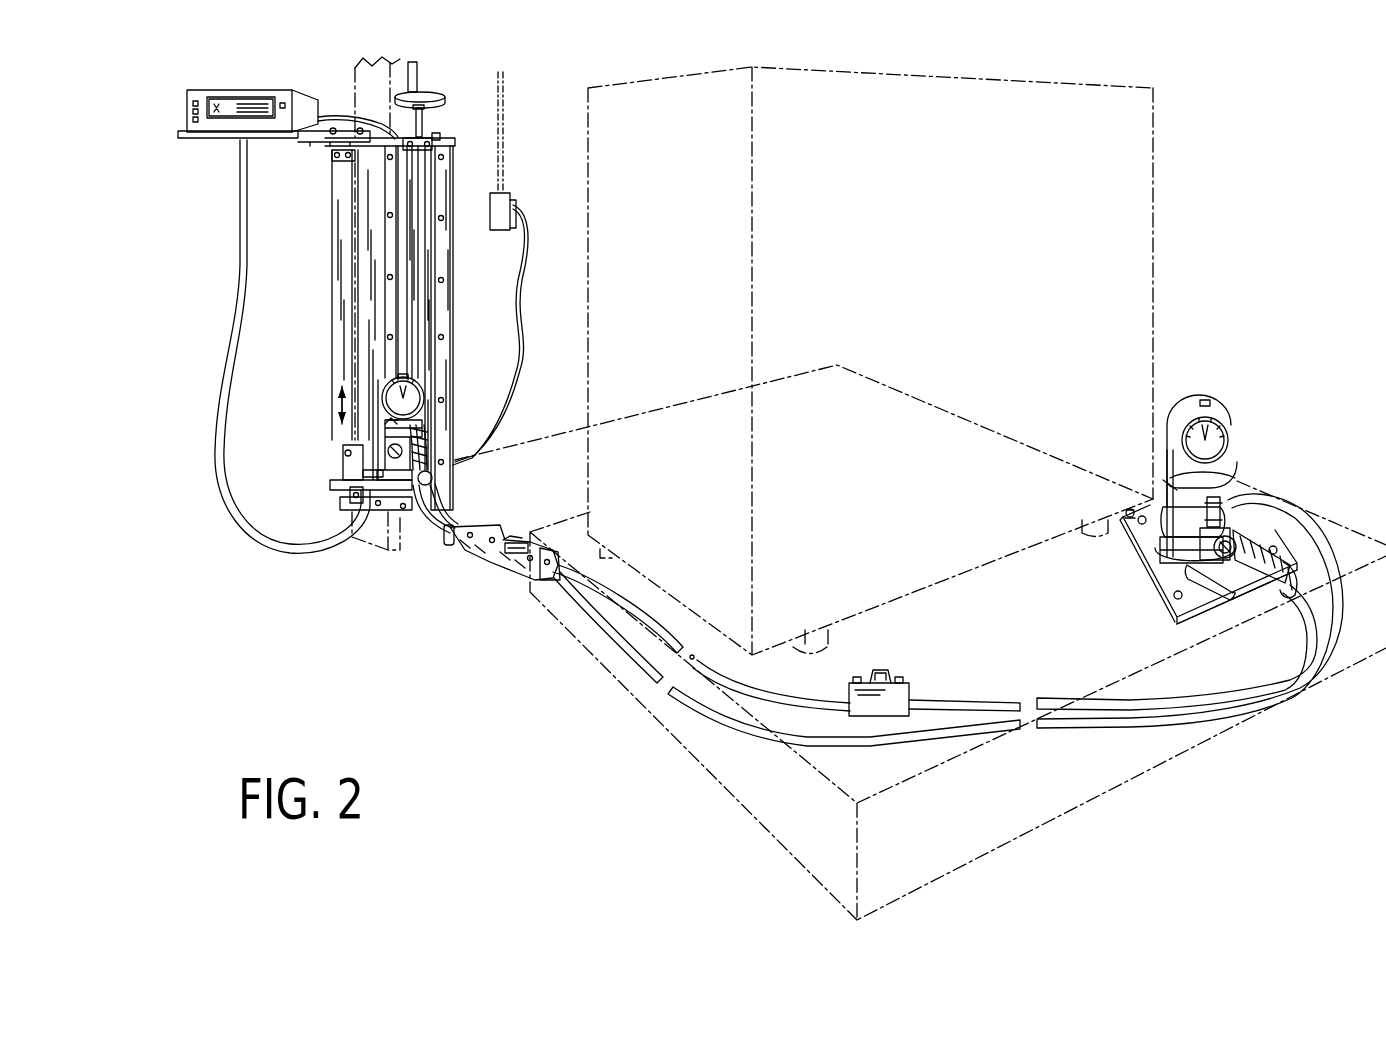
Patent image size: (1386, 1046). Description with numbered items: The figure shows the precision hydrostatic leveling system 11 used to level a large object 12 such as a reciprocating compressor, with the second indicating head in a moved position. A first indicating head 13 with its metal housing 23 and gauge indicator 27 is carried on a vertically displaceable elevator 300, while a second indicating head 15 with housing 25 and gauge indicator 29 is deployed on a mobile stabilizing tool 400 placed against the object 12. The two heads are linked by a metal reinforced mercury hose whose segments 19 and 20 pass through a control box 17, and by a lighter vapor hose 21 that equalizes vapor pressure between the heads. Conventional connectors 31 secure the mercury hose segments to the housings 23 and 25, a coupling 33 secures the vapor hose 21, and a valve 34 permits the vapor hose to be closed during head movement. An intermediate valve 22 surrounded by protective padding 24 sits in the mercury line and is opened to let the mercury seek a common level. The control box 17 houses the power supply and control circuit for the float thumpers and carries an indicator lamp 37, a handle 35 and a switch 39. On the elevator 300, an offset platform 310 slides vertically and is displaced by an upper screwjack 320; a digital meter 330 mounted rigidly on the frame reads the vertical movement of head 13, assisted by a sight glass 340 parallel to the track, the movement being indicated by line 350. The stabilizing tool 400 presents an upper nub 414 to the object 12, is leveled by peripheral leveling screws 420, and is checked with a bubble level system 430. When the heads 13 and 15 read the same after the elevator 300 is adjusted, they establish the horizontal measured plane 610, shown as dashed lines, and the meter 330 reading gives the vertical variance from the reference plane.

The precision hydrostatic leveling system 11 is at (372, 650).
The large object 12 is at (1163, 122).
The first indicating head 13 is at (428, 388).
The second indicating head 15 is at (1170, 412).
The control box 17 is at (920, 690).
The hose segment 19 is at (632, 587).
The hose segment 20 is at (1073, 697).
The vapor hose 21 is at (615, 637).
The intermediate valve 22 is at (503, 542).
The housing 23 is at (384, 440).
The protective padding 24 is at (492, 561).
The housing 25 is at (1233, 458).
The gauge indicator 27 is at (413, 385).
The gauge indicator 29 is at (1217, 410).
The connector 31 is at (422, 460).
The coupling 33 is at (388, 428).
The valve 34 is at (386, 453).
The handle 35 is at (879, 672).
The indicator lamp 37 is at (858, 677).
The switch 39 is at (900, 677).
The elevator 300 is at (232, 217).
The offset platform 310 is at (343, 474).
The upper screwjack 320 is at (436, 78).
The digital meter 330 is at (270, 150).
The sight glass 340 is at (327, 313).
The line of vertical movement 350 is at (340, 400).
The stabilizing tool 400 is at (1152, 603).
The upper nub 414 is at (1125, 510).
The leveling screws 420 is at (1175, 628).
The bubble level system 430 is at (1230, 598).
The measured plane 610 is at (1142, 492).